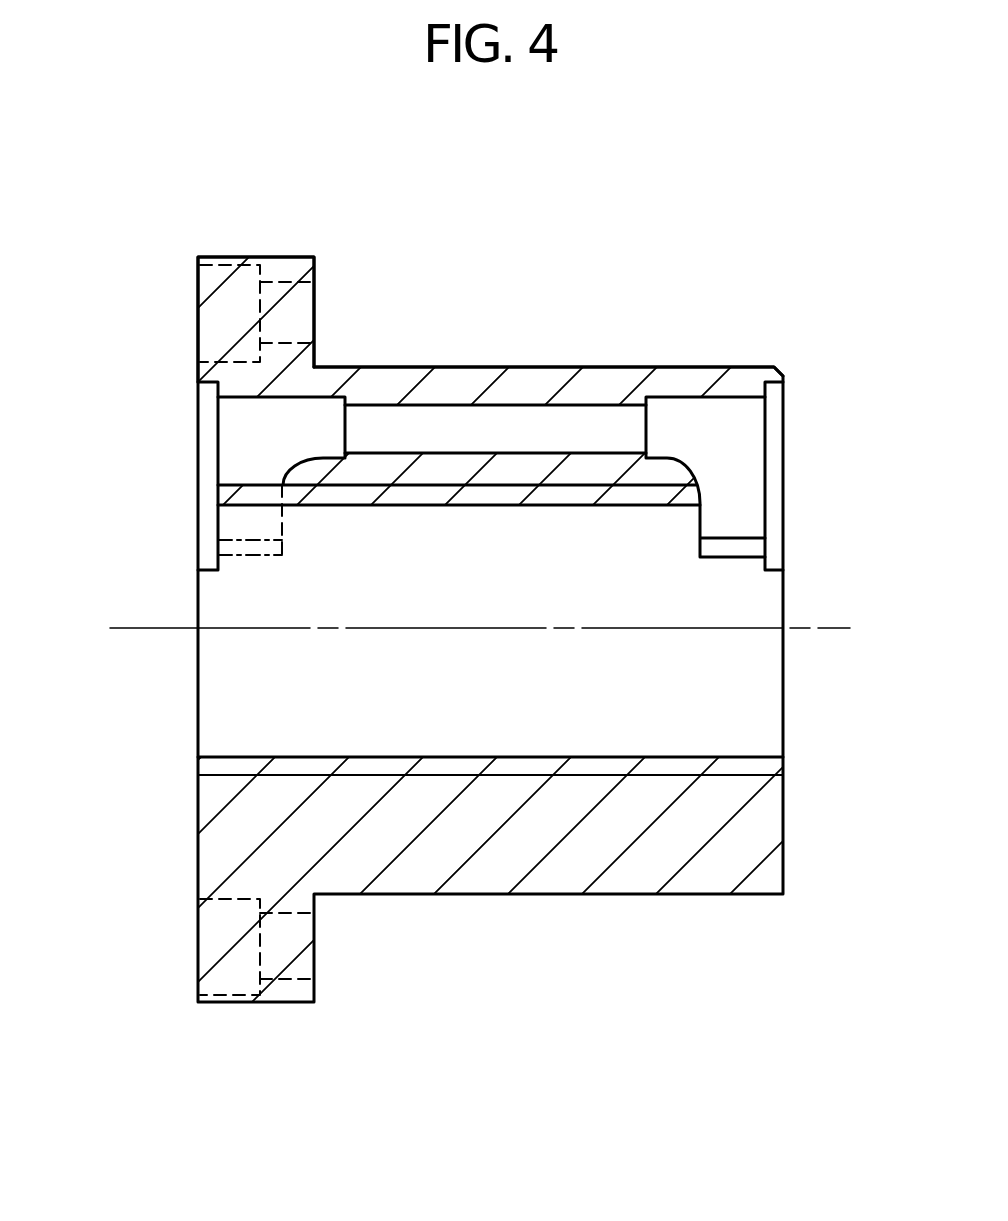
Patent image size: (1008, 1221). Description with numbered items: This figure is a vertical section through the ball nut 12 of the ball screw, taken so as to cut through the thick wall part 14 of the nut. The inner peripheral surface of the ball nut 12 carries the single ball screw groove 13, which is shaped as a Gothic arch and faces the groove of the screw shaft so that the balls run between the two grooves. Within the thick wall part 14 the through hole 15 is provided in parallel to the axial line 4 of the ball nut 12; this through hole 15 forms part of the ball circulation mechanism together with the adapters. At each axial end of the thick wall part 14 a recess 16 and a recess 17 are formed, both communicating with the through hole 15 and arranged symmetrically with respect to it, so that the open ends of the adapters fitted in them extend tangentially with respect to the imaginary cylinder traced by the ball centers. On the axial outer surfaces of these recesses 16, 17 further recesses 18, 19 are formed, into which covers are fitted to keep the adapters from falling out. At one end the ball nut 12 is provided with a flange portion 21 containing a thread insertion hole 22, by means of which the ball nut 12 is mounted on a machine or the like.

The axial line 4 is at (142, 630).
The ball nut 12 is at (631, 210).
The ball screw groove 13 is at (678, 766).
The thick wall part 14 is at (398, 377).
The through hole 15 is at (518, 422).
The recess 16 is at (242, 415).
The recess 17 is at (733, 465).
The recess for a cover 18 is at (207, 473).
The recess for a cover 19 is at (772, 410).
The flange portion 21 is at (282, 270).
The thread insertion hole 22 is at (218, 318).